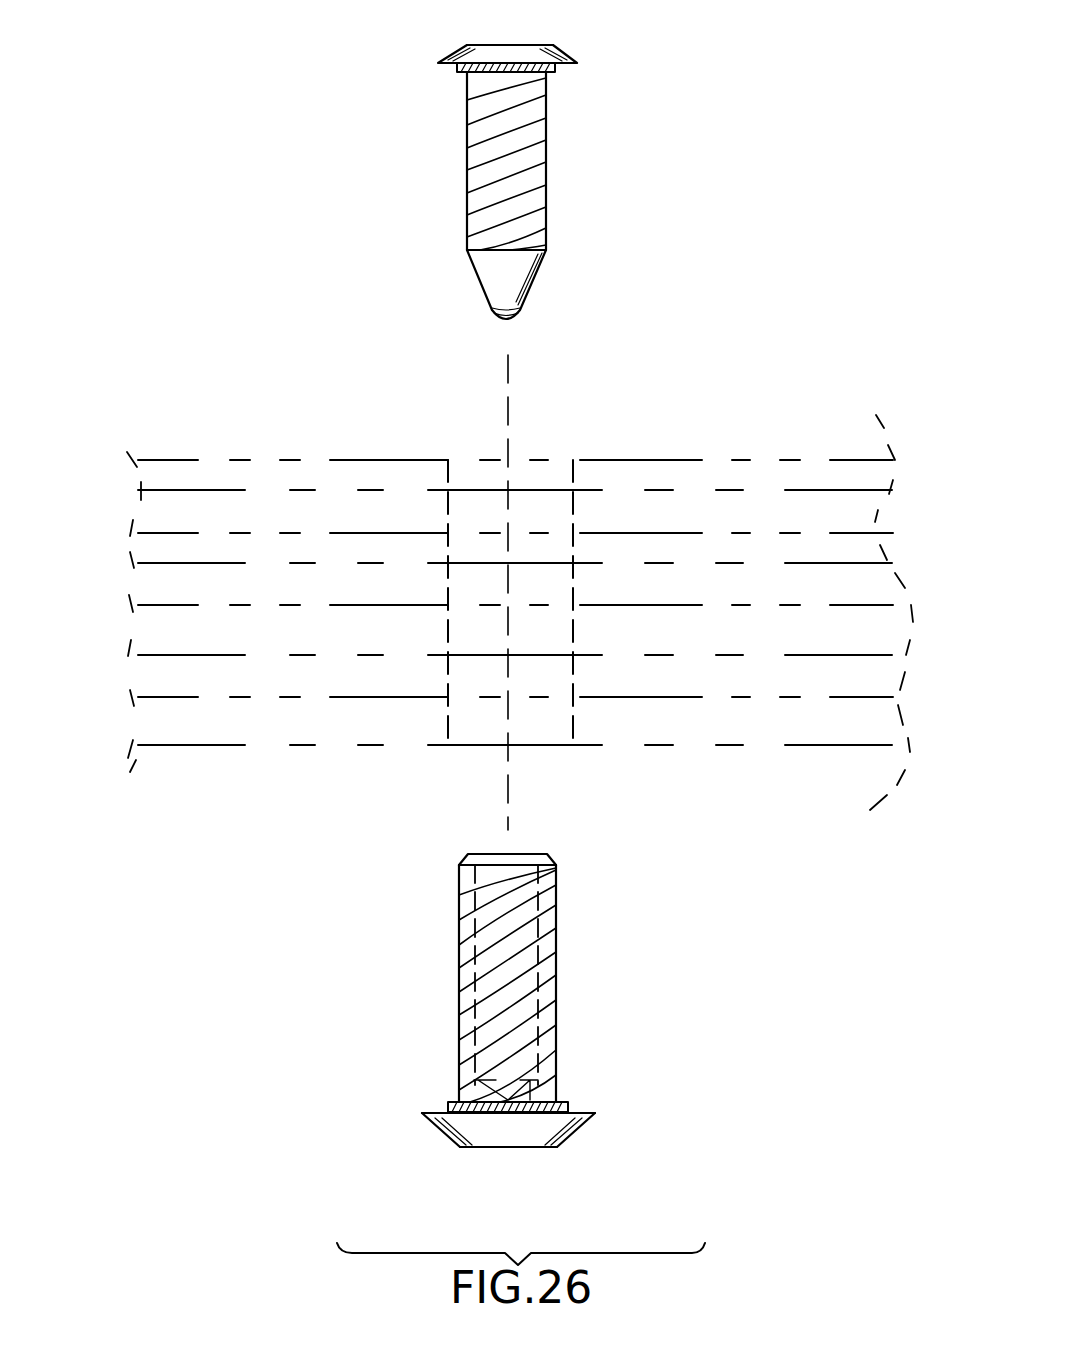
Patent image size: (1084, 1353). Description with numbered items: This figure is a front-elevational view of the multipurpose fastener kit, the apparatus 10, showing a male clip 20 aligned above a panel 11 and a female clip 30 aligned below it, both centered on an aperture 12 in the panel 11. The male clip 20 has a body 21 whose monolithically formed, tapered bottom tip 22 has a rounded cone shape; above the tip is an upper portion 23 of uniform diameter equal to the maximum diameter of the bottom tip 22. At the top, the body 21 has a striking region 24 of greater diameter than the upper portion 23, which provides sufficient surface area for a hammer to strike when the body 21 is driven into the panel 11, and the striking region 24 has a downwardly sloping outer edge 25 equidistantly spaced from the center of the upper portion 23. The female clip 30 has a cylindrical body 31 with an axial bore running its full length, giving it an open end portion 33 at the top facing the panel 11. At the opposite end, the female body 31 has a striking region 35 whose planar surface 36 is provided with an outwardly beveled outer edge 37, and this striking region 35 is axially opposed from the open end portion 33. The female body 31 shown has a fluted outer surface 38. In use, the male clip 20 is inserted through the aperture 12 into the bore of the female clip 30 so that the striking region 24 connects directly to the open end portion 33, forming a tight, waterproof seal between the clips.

The apparatus 10 is at (262, 148).
The panel 11 is at (283, 530).
The aperture 12 is at (448, 468).
The male clip 20 is at (556, 249).
The body 21 is at (546, 172).
The bottom tip 22 is at (502, 322).
The upper portion 23 is at (546, 112).
The striking region 24 is at (507, 45).
The downwardly sloping outer edge 25 is at (553, 45).
The female clip 30 is at (564, 1092).
The cylindrical body 31 is at (556, 942).
The open end portion 33 is at (525, 853).
The striking region 35 is at (555, 1147).
The planar surface 36 is at (500, 1148).
The outwardly beveled outer edge 37 is at (585, 1123).
The fluted outer surface 38 is at (459, 968).